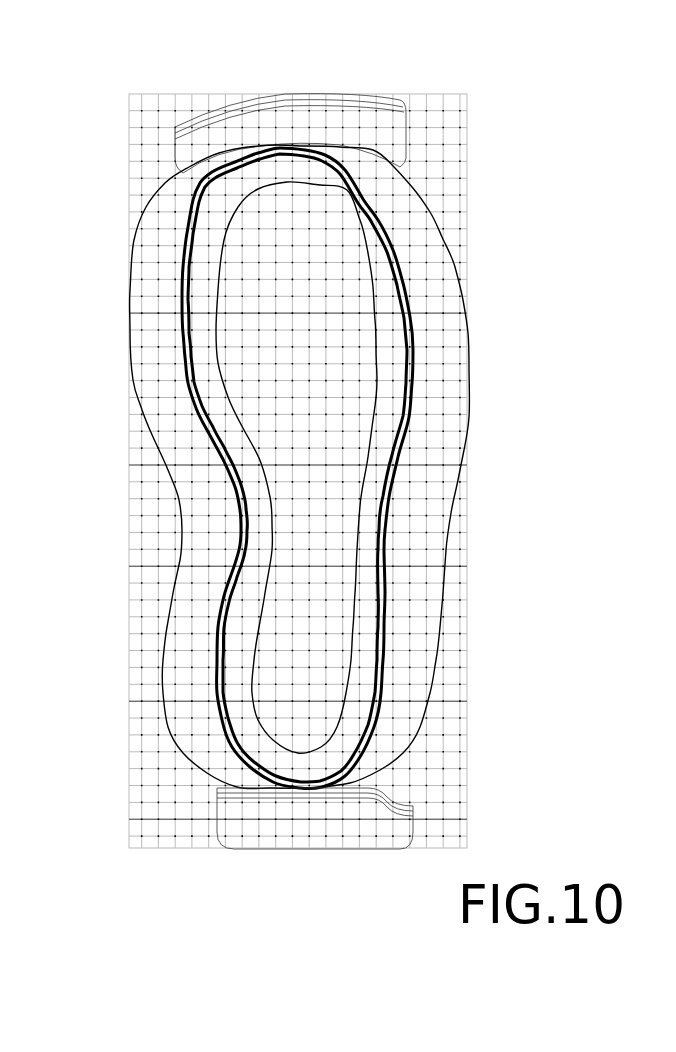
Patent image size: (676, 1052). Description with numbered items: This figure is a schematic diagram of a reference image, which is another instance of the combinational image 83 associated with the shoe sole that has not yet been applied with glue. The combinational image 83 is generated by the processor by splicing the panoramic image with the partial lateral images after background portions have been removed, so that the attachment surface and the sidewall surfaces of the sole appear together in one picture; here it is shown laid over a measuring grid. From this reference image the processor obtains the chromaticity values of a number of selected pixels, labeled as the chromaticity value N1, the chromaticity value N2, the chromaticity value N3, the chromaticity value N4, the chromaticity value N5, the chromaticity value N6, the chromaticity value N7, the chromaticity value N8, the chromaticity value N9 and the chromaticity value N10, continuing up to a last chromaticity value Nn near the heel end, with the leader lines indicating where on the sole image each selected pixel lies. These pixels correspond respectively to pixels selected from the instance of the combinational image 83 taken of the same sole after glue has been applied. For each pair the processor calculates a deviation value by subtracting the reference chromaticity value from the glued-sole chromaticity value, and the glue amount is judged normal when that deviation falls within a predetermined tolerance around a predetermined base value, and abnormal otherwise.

The combinational image 83 is at (467, 94).
The chromaticity value of the first selected pixel N1 is at (267, 97).
The chromaticity value of the second selected pixel N2 is at (267, 118).
The chromaticity value of the third selected pixel N3 is at (267, 137).
The chromaticity value of the fourth selected pixel N4 is at (262, 150).
The chromaticity value of the fifth selected pixel N5 is at (267, 172).
The chromaticity value of the sixth selected pixel N6 is at (267, 182).
The chromaticity value of the seventh selected pixel N7 is at (267, 203).
The chromaticity value of the eighth selected pixel N8 is at (267, 220).
The chromaticity value of the ninth selected pixel N9 is at (267, 238).
The chromaticity value of the tenth selected pixel N10 is at (267, 255).
The chromaticity value of the n-th selected pixel Nn is at (270, 770).